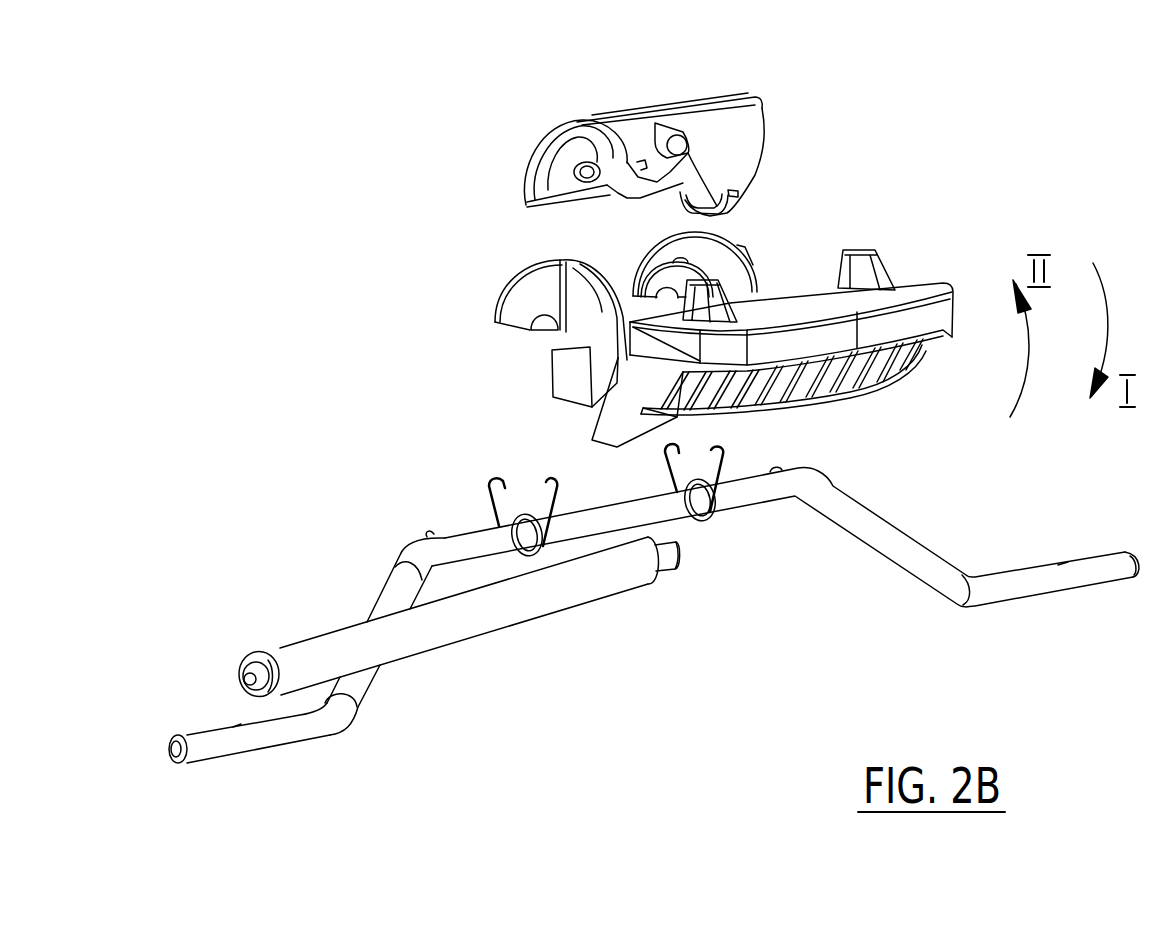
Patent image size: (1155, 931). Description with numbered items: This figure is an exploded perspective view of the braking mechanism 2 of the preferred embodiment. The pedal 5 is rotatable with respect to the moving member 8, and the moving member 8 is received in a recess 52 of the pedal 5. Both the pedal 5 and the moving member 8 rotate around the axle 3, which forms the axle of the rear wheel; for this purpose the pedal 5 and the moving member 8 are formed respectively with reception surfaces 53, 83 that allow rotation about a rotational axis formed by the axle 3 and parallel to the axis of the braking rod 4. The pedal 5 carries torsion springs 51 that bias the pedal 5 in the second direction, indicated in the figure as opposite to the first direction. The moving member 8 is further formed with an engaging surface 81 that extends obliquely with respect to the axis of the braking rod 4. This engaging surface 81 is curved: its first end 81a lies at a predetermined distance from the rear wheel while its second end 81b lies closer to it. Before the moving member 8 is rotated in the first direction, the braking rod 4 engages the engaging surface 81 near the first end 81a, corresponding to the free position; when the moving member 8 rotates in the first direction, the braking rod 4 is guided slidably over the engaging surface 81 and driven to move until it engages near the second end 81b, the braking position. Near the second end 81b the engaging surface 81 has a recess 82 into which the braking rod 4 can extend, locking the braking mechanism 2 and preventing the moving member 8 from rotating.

The braking mechanism 2 is at (435, 293).
The axle 3 is at (920, 562).
The braking rod 4 is at (523, 663).
The pedal 5 is at (817, 340).
The moving member 8 is at (543, 153).
The torsion springs 51 is at (490, 492).
The recess 52 is at (627, 307).
The reception surface 53 is at (543, 325).
The engaging surface 81 is at (697, 175).
The first end 81a is at (722, 212).
The second end 81b is at (697, 142).
The recess 82 is at (667, 140).
The reception surface 83 is at (535, 178).